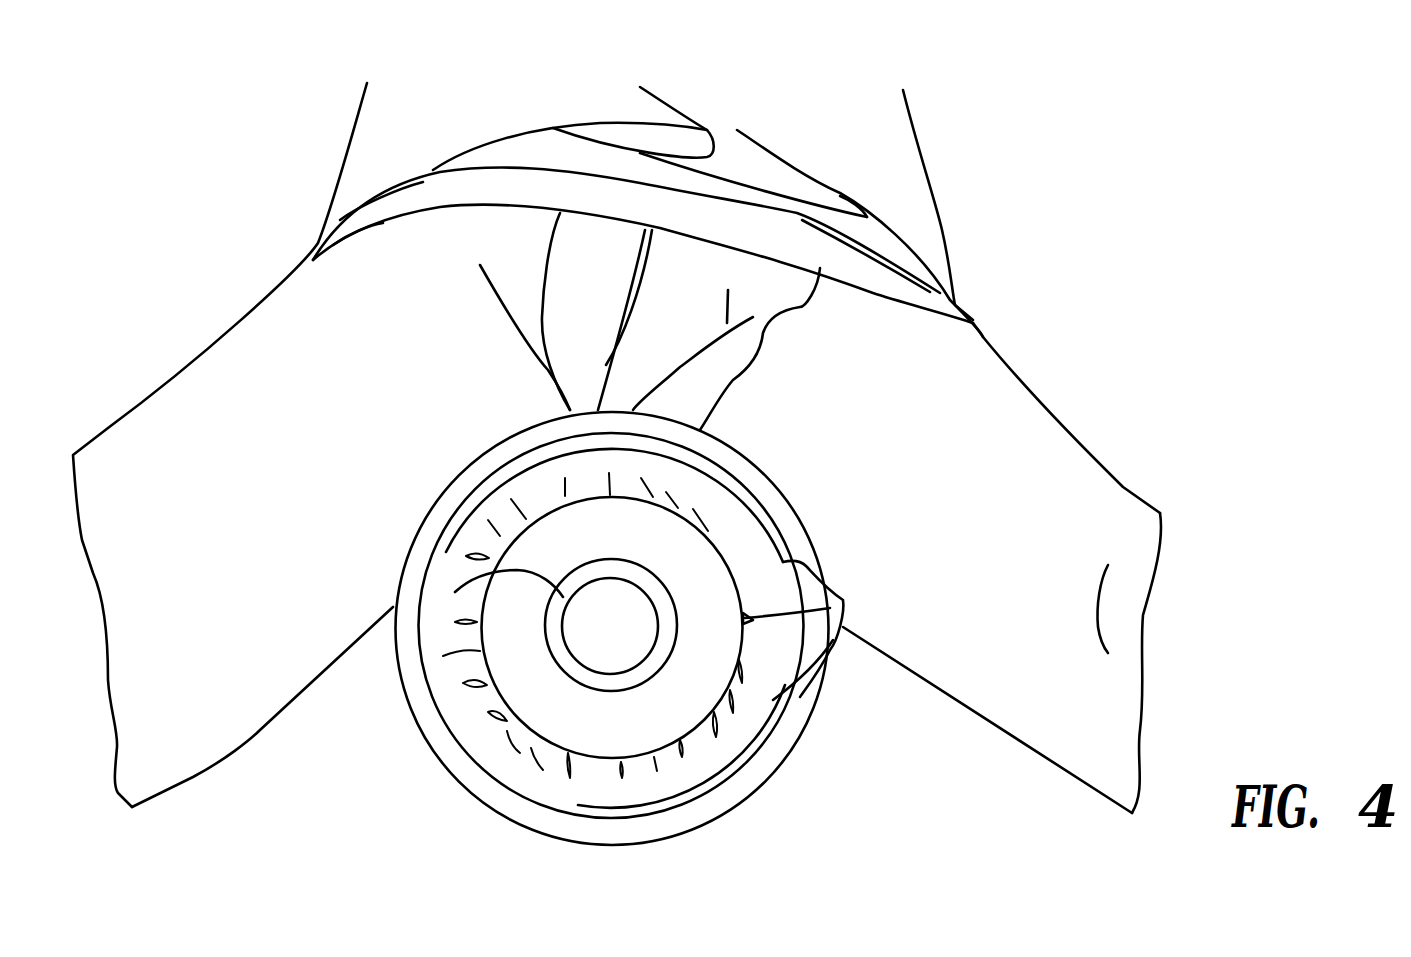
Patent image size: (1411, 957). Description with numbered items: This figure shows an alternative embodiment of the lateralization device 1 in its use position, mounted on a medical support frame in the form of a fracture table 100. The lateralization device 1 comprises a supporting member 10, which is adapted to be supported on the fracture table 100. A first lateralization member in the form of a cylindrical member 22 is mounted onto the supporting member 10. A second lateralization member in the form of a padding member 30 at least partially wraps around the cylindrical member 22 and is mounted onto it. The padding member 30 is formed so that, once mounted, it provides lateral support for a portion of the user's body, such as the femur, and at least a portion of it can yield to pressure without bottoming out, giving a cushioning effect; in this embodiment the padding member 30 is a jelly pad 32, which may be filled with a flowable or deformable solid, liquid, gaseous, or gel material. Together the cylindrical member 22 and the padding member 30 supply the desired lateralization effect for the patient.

The lateralization device 1 is at (822, 464).
The supporting member 10 is at (455, 592).
The cylindrical member 22 is at (507, 672).
The padding member 30 is at (440, 748).
The jelly pad 32 is at (513, 772).
The fracture table 100 is at (1133, 163).